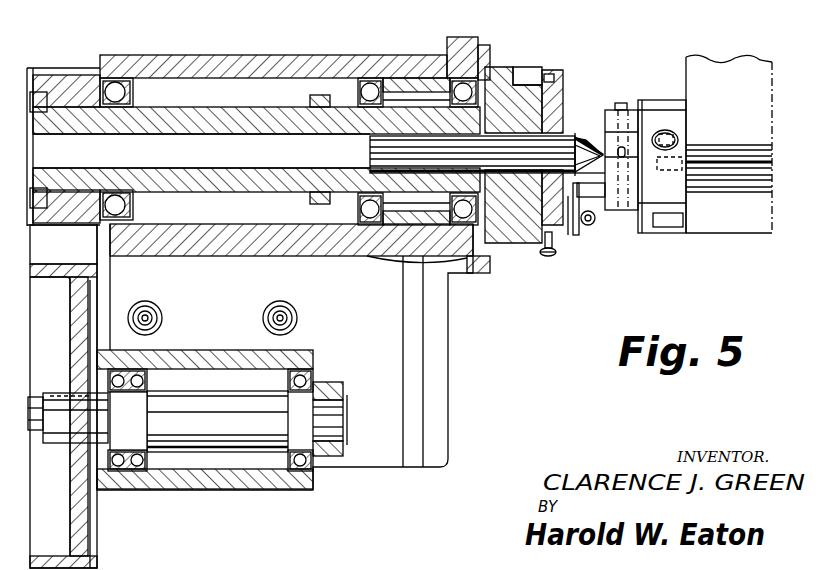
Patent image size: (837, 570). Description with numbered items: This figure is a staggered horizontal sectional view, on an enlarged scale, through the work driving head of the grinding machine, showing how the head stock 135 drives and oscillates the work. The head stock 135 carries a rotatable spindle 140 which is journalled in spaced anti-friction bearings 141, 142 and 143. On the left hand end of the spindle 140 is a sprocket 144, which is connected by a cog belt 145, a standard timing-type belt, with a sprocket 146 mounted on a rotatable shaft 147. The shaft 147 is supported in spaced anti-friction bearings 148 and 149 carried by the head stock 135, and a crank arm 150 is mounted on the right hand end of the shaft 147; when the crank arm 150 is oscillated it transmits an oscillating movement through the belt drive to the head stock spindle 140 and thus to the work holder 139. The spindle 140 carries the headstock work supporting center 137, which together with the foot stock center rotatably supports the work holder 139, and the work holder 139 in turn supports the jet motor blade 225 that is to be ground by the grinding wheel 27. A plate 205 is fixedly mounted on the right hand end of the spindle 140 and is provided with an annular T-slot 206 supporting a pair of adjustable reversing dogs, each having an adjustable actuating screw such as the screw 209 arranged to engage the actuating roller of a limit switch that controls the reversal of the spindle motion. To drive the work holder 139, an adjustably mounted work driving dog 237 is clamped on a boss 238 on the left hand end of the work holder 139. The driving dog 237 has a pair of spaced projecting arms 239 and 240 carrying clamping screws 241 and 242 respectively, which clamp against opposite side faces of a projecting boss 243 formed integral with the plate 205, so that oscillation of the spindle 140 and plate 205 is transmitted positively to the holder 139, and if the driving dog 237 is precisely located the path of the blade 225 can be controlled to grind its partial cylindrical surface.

The grinding wheel 27 is at (718, 66).
The head stock 135 is at (161, 62).
The work supporting center 137 is at (568, 140).
The work holder 139 is at (740, 236).
The spindle 140 is at (218, 114).
The anti-friction bearing 141 is at (115, 90).
The anti-friction bearing 142 is at (370, 90).
The anti-friction bearing 143 is at (462, 90).
The sprocket 144 is at (65, 78).
The cog belt 145 is at (63, 244).
The sprocket 146 is at (83, 540).
The shaft 147 is at (203, 440).
The anti-friction bearing 148 is at (130, 472).
The anti-friction bearing 149 is at (302, 472).
The crank arm 150 is at (333, 458).
The plate 205 is at (526, 68).
The annular T-slot 206 is at (548, 74).
The actuating screw 209 is at (544, 252).
The jet motor blade 225 is at (757, 160).
The work driving dog 237 is at (616, 212).
The boss 238 is at (618, 173).
The projecting arm 239 is at (600, 127).
The projecting arm 240 is at (580, 200).
The clamping screw 241 is at (590, 133).
The clamping screw 242 is at (592, 225).
The projecting boss 243 is at (570, 200).